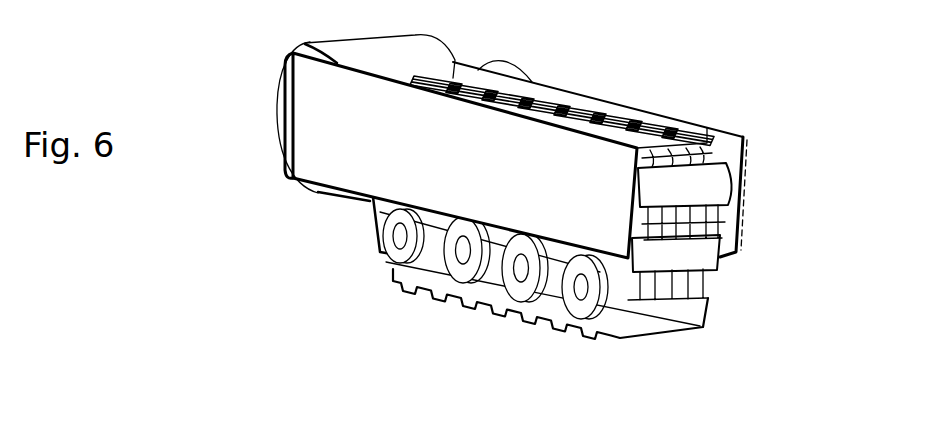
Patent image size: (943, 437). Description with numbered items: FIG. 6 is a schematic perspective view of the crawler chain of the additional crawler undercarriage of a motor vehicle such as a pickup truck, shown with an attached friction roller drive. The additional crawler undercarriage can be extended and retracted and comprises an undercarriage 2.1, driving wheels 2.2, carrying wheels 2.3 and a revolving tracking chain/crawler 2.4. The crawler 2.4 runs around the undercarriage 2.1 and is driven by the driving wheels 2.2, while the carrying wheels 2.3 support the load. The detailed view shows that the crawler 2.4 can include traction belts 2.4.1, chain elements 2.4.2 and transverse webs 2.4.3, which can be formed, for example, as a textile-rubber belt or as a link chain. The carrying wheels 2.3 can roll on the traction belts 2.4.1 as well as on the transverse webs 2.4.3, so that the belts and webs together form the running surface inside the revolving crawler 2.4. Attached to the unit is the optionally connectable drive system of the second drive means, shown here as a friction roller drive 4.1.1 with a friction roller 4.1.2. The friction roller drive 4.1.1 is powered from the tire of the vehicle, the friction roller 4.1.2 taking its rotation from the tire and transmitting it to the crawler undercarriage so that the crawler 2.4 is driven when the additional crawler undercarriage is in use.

The undercarriage 2.1 is at (457, 173).
The driving wheels 2.2 is at (320, 146).
The carrying wheels 2.3 is at (527, 293).
The revolving tracking chain/crawler 2.4 is at (574, 81).
The traction belts 2.4.1 is at (702, 160).
The chain elements 2.4.2 is at (737, 250).
The transverse webs 2.4.3 is at (668, 140).
The friction roller drive 4.1.1 is at (357, 50).
The friction roller 4.1.2 is at (347, 62).